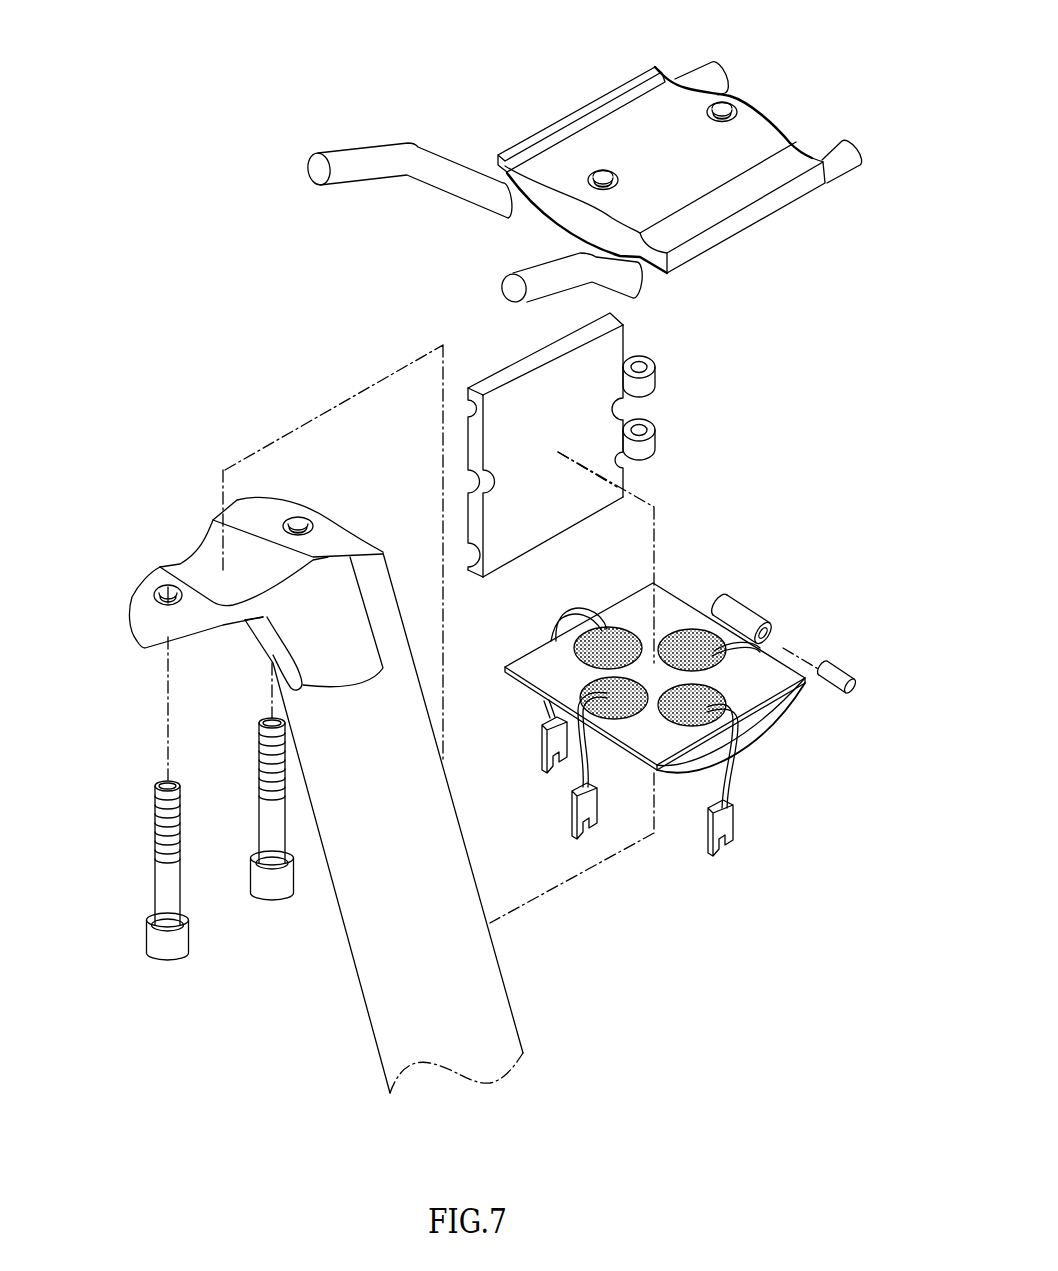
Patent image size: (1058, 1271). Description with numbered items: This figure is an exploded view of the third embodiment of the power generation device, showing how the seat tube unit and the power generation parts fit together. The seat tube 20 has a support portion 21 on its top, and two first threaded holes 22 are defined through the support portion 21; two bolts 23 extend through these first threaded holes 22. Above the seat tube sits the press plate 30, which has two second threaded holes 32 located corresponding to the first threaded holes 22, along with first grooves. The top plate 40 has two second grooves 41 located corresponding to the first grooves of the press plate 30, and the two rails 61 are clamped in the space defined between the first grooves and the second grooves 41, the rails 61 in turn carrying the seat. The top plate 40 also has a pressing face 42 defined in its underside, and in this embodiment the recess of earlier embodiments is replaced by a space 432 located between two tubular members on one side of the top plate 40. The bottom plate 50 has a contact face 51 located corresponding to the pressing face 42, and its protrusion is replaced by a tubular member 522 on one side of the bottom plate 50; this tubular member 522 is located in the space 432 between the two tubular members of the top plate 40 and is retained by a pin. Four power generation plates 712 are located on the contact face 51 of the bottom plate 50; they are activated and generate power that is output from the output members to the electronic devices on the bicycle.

The seat tube 20 is at (360, 925).
The support portion 21 is at (228, 592).
The first threaded hole 22 is at (163, 593).
The bolt 23 is at (155, 941).
The press plate 30 is at (648, 163).
The second threaded hole 32 is at (603, 180).
The top plate 40 is at (491, 443).
The second groove 41 is at (475, 407).
The pressing face 42 is at (553, 377).
The space 432 is at (658, 410).
The bottom plate 50 is at (684, 681).
The contact face 51 is at (760, 686).
The tubular member 522 is at (750, 617).
The rail 61 is at (710, 74).
The power generation plate 712 is at (703, 695).